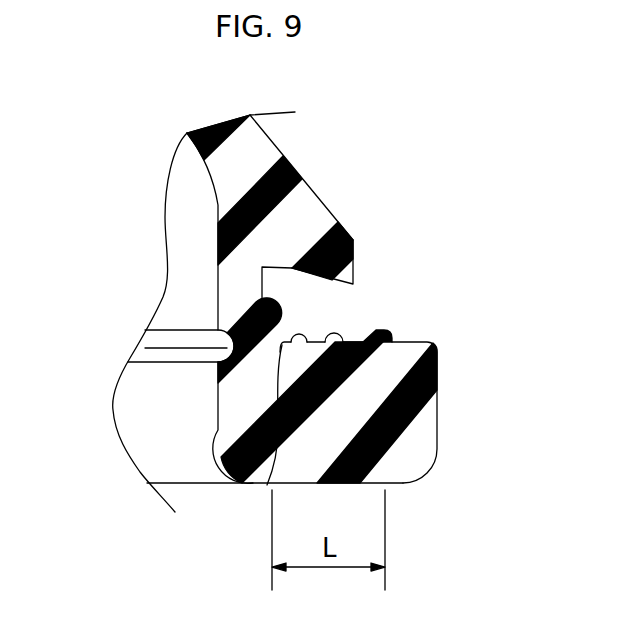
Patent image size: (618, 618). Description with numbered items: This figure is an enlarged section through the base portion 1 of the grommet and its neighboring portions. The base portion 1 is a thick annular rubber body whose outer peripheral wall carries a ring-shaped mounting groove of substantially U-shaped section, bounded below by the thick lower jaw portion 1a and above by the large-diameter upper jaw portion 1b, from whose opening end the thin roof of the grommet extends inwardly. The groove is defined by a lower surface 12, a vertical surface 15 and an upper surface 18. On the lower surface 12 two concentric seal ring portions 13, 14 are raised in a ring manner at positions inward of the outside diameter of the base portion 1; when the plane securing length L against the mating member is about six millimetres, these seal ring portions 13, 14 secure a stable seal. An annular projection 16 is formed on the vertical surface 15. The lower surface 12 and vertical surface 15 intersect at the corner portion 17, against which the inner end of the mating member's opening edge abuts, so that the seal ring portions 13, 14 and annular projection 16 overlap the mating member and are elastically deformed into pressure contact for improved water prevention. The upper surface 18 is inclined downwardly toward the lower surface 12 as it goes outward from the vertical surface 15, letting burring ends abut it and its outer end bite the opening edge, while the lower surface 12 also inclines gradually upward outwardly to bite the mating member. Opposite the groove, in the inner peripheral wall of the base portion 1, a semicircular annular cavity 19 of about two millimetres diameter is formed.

The base portion 1 is at (366, 297).
The lower jaw portion 1a is at (418, 443).
The upper jaw portion 1b is at (278, 145).
The lower surface 12 is at (267, 485).
The seal ring portion 13 is at (328, 340).
The seal ring portion 14 is at (383, 333).
The vertical surface 15 is at (258, 275).
The annular projection 16 is at (282, 314).
The corner portion 17 is at (270, 340).
The upper surface 18 is at (295, 272).
The annular cavity 19 is at (145, 353).